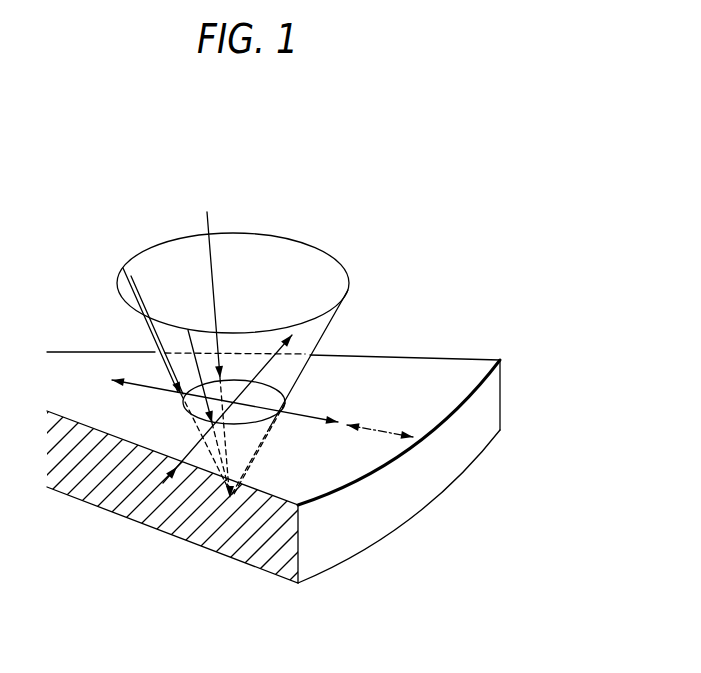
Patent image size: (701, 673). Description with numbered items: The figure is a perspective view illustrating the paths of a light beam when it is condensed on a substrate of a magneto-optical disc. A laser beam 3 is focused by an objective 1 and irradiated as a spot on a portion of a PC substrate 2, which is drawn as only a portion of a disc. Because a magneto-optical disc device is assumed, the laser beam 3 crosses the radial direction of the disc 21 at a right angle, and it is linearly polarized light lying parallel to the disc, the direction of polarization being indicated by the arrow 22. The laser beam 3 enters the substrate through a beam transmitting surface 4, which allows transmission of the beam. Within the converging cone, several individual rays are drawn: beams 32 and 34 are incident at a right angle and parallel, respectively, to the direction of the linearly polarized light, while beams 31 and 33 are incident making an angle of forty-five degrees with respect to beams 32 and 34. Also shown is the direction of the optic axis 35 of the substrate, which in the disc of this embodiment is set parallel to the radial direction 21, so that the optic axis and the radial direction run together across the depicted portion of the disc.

The objective 1 is at (283, 250).
The PC substrate 2 is at (418, 493).
The laser beam 3 is at (314, 325).
The beam transmitting surface 4 is at (272, 397).
The radial direction of the disc 21 is at (316, 418).
The direction of polarization 22 is at (190, 455).
The beam 31 is at (211, 254).
The beam 32 is at (122, 283).
The beam 33 is at (140, 330).
The beam 34 is at (193, 350).
The optic axis 35 is at (375, 423).